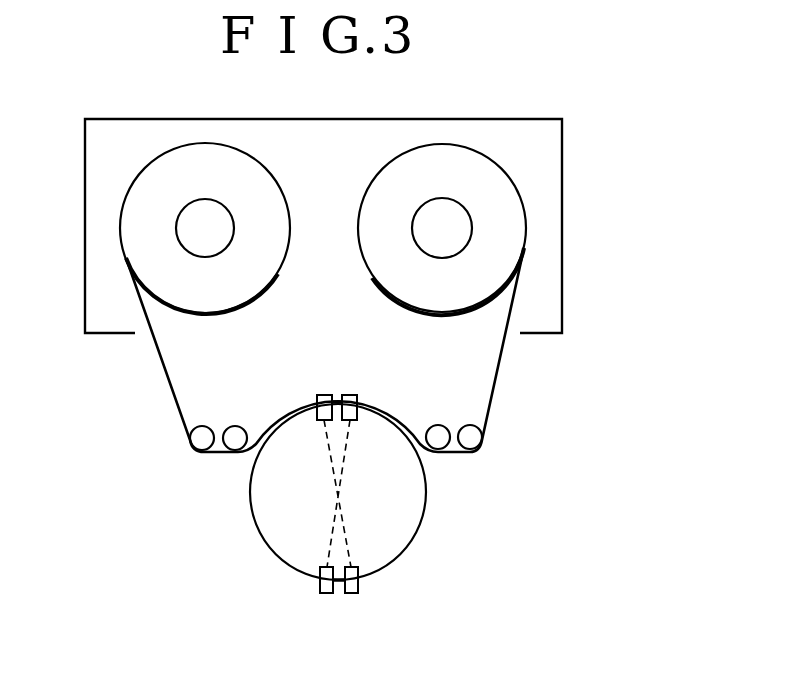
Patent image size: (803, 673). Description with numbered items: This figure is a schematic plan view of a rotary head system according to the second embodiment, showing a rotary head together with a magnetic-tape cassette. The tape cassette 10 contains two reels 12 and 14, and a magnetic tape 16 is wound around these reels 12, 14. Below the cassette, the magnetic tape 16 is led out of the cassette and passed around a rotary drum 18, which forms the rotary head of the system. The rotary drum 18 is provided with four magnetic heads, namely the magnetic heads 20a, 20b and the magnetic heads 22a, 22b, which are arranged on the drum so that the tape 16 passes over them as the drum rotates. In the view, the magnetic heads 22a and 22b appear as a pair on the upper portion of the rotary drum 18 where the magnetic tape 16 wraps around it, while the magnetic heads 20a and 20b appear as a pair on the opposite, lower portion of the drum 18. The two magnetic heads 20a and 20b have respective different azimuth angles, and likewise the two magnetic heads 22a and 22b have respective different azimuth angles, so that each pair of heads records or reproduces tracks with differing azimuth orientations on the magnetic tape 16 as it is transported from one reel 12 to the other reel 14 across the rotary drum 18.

The tape cassette 10 is at (582, 172).
The reel 12 is at (127, 223).
The reel 14 is at (507, 225).
The magnetic tape 16 is at (497, 385).
The rotary drum 18 is at (412, 518).
The magnetic head 20a is at (322, 597).
The magnetic head 20b is at (360, 595).
The magnetic head 22a is at (362, 397).
The magnetic head 22b is at (310, 398).